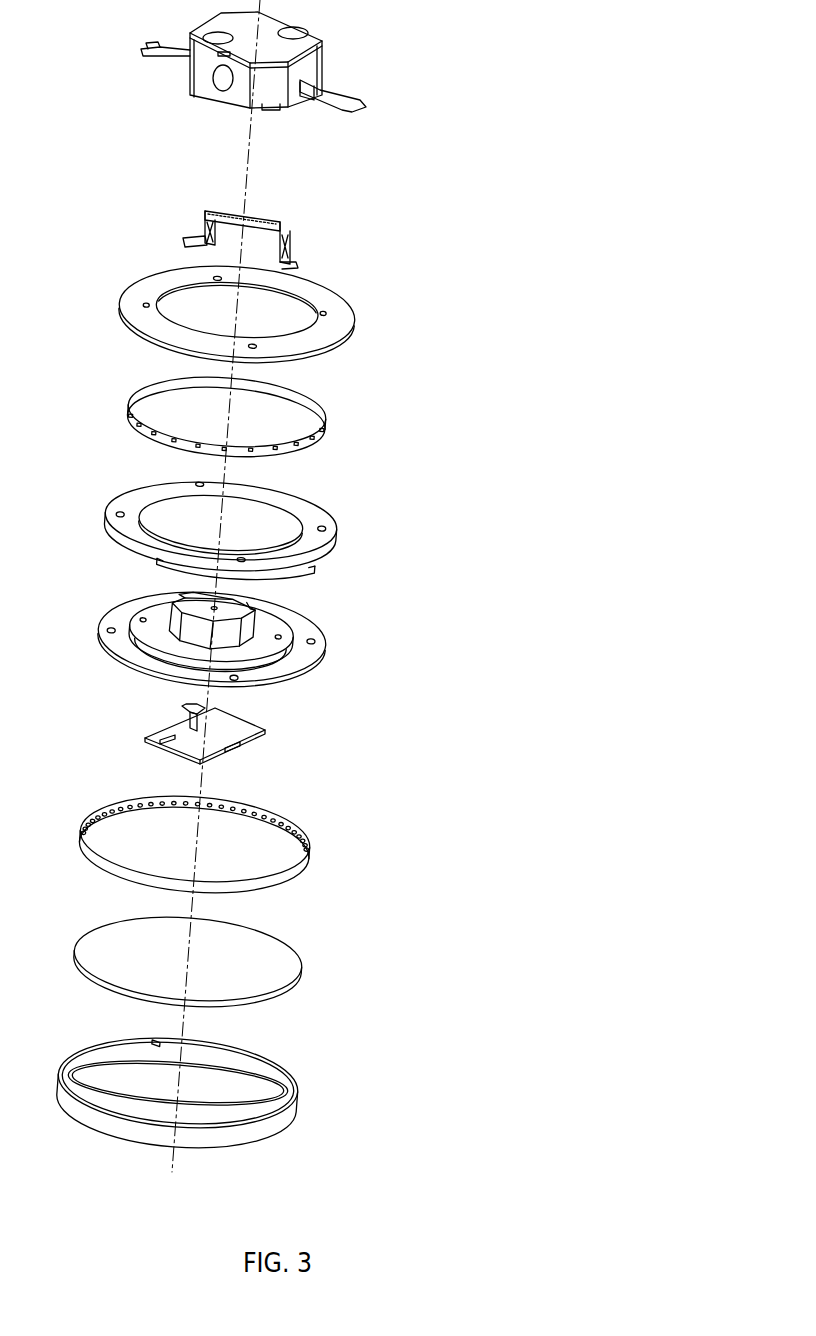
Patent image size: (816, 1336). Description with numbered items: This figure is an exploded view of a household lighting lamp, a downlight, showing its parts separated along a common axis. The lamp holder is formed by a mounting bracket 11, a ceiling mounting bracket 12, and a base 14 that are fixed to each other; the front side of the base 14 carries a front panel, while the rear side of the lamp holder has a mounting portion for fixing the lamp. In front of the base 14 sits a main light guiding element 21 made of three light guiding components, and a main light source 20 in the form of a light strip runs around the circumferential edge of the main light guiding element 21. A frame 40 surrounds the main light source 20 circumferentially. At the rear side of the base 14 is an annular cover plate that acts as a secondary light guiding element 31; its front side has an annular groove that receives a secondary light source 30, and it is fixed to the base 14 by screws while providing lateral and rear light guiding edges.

The mounting bracket 11 is at (305, 63).
The ceiling mounting bracket 12 is at (282, 245).
The secondary light guiding element 31 is at (330, 323).
The secondary light source 30 is at (327, 432).
The base 14 is at (310, 660).
The main light source 20 is at (297, 877).
The main light guiding element 21 is at (278, 997).
The frame 40 is at (287, 1127).